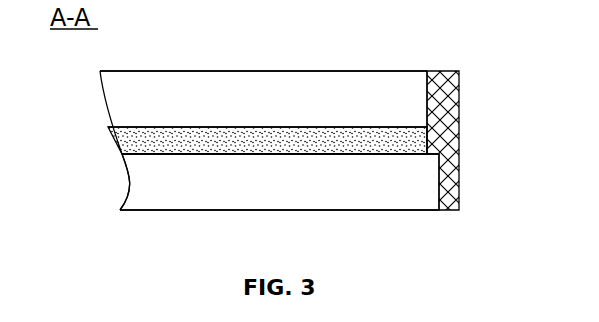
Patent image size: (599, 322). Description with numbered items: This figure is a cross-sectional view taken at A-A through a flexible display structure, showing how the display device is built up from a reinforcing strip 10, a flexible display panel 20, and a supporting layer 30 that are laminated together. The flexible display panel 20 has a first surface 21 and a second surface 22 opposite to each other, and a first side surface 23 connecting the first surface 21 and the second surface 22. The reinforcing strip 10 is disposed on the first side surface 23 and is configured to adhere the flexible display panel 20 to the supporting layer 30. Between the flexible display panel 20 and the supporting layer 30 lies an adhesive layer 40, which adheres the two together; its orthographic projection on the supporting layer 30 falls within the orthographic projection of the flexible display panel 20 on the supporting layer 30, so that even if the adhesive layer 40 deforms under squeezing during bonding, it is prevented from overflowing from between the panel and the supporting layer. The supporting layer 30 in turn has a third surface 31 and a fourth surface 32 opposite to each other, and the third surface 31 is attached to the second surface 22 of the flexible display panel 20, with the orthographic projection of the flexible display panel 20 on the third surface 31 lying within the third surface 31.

The reinforcing strip 10 is at (460, 137).
The flexible display panel 20 is at (100, 98).
The first surface 21 is at (178, 71).
The second surface 22 is at (108, 127).
The first side surface 23 is at (427, 73).
The supporting layer 30 is at (127, 205).
The third surface 31 is at (122, 154).
The fourth surface 32 is at (120, 210).
The adhesive layer 40 is at (115, 140).